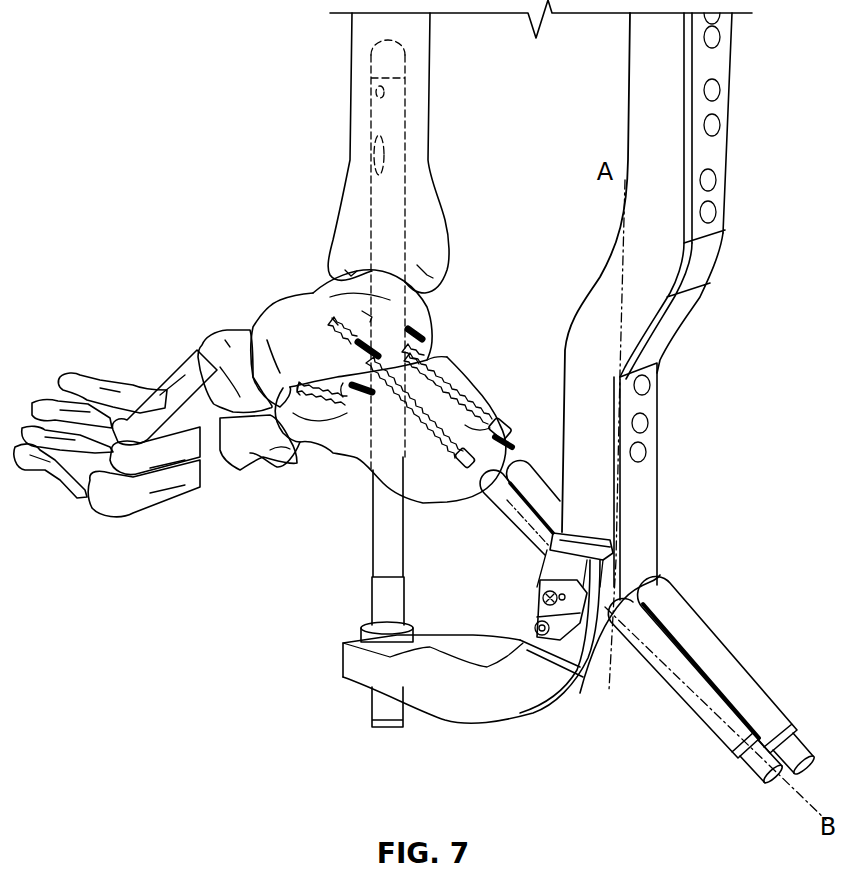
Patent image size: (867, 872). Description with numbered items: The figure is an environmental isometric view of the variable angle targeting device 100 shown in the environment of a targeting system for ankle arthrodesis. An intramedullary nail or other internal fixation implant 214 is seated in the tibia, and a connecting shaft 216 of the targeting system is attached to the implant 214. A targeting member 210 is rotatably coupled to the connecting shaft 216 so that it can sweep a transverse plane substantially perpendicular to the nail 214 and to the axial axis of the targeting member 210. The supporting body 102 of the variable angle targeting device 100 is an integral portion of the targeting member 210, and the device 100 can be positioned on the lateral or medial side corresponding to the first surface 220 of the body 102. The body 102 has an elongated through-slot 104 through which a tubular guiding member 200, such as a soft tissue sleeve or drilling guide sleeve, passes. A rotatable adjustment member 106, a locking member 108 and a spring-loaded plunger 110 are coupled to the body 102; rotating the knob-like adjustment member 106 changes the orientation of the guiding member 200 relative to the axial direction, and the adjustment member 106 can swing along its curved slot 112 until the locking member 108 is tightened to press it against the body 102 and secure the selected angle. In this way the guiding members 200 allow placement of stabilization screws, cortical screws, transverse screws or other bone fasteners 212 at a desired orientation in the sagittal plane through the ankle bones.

The variable angle targeting device 100 is at (690, 590).
The supporting body 102 is at (652, 555).
The elongated through-slot 104 is at (692, 598).
The rotatable adjustment member 106 is at (545, 548).
The locking member 108 is at (540, 598).
The spring-loaded plunger 110 is at (540, 630).
The curved slot 112 is at (590, 660).
The tubular guiding member 200 is at (757, 700).
The targeting member 210 is at (723, 148).
The bone fasteners 212 is at (417, 377).
The internal fixation implant 214 is at (393, 183).
The connecting shaft 216 is at (380, 543).
The first surface 220 is at (588, 412).